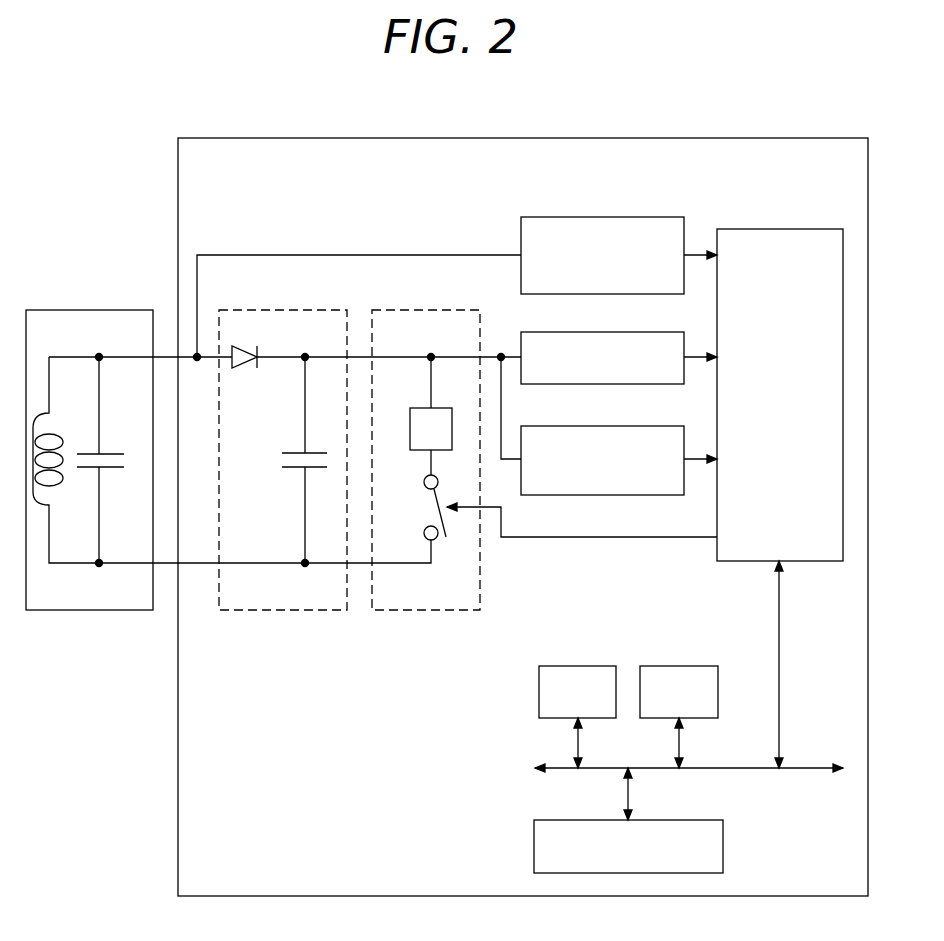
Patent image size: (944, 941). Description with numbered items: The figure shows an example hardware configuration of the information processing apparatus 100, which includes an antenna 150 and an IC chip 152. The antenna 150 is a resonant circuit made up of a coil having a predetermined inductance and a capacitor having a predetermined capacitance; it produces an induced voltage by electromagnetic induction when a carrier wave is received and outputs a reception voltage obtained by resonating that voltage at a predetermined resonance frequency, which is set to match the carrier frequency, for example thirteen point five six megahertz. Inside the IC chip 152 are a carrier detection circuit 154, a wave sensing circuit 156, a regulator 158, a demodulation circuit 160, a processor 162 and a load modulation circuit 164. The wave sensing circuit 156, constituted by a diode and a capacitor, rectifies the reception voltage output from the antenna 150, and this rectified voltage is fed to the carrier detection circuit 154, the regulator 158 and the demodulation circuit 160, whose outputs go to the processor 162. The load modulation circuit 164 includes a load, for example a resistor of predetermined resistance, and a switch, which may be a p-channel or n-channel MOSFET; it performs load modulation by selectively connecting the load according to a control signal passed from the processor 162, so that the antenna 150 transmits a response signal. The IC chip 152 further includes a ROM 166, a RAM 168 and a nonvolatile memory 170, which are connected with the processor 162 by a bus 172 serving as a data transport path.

The information processing apparatus 100 is at (777, 80).
The antenna 150 is at (84, 308).
The IC chip 152 is at (760, 138).
The carrier detection circuit 154 is at (610, 217).
The wave sensing circuit 156 is at (282, 308).
The regulator 158 is at (610, 332).
The demodulation circuit 160 is at (610, 426).
The processor 162 is at (770, 229).
The load modulation circuit 164 is at (414, 308).
The read only memory (ROM) 166 is at (575, 665).
The random access memory (RAM) 168 is at (676, 665).
The nonvolatile memory 170 is at (534, 847).
The bus 172 is at (813, 760).